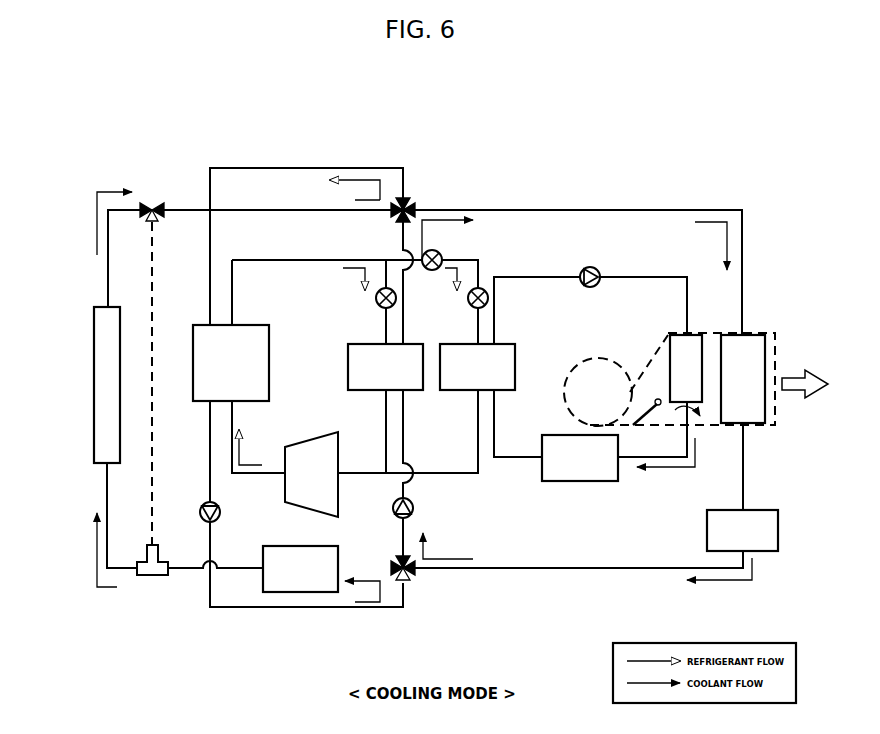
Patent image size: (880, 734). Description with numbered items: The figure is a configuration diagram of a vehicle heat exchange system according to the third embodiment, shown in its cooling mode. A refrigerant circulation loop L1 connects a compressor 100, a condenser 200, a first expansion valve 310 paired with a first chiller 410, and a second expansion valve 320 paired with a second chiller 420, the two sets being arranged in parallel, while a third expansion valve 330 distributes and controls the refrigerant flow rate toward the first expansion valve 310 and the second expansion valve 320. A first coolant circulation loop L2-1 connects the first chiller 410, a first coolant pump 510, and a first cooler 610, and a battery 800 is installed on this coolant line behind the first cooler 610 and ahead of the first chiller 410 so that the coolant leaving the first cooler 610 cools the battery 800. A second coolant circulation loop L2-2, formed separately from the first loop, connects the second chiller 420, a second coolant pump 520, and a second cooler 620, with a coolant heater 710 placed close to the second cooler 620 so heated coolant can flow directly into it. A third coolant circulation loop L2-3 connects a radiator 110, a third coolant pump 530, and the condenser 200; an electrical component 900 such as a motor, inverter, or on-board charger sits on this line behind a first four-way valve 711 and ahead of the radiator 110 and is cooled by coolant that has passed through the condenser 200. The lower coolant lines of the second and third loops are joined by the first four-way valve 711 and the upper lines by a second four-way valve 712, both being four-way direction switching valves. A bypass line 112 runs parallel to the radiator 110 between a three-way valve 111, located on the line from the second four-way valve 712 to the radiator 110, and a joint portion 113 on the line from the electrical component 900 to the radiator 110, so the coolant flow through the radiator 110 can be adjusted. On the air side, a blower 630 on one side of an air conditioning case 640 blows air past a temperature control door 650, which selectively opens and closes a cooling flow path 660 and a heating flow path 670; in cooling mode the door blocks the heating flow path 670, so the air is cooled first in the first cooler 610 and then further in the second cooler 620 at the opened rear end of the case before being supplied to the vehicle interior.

The compressor 100 is at (283, 487).
The radiator 110 is at (94, 380).
The three-way valve 111 is at (152, 200).
The bypass line 112 is at (150, 482).
The joint portion 113 is at (152, 578).
The condenser 200 is at (193, 345).
The first expansion valve 310 is at (480, 290).
The second expansion valve 320 is at (375, 293).
The third expansion valve 330 is at (443, 255).
The first chiller 410 is at (507, 344).
The second chiller 420 is at (348, 368).
The first coolant pump 510 is at (592, 268).
The second coolant pump 520 is at (413, 507).
The third coolant pump 530 is at (201, 520).
The first cooler 610 is at (702, 335).
The second cooler 620 is at (767, 343).
The blower 630 is at (608, 358).
The air conditioning case 640 is at (745, 333).
The temperature control door 650 is at (648, 410).
The cooling flow path 660 is at (653, 375).
The heating flow path 670 is at (690, 420).
The coolant heater 710 is at (762, 551).
The first four-way valve 711 is at (406, 584).
The second four-way valve 712 is at (410, 198).
The battery 800 is at (578, 481).
The electrical component 900 is at (297, 592).
The refrigerant circulation loop L1 is at (288, 257).
The first coolant circulation loop L2-1 is at (567, 275).
The second coolant circulation loop L2-2 is at (673, 207).
The third coolant circulation loop L2-3 is at (193, 207).